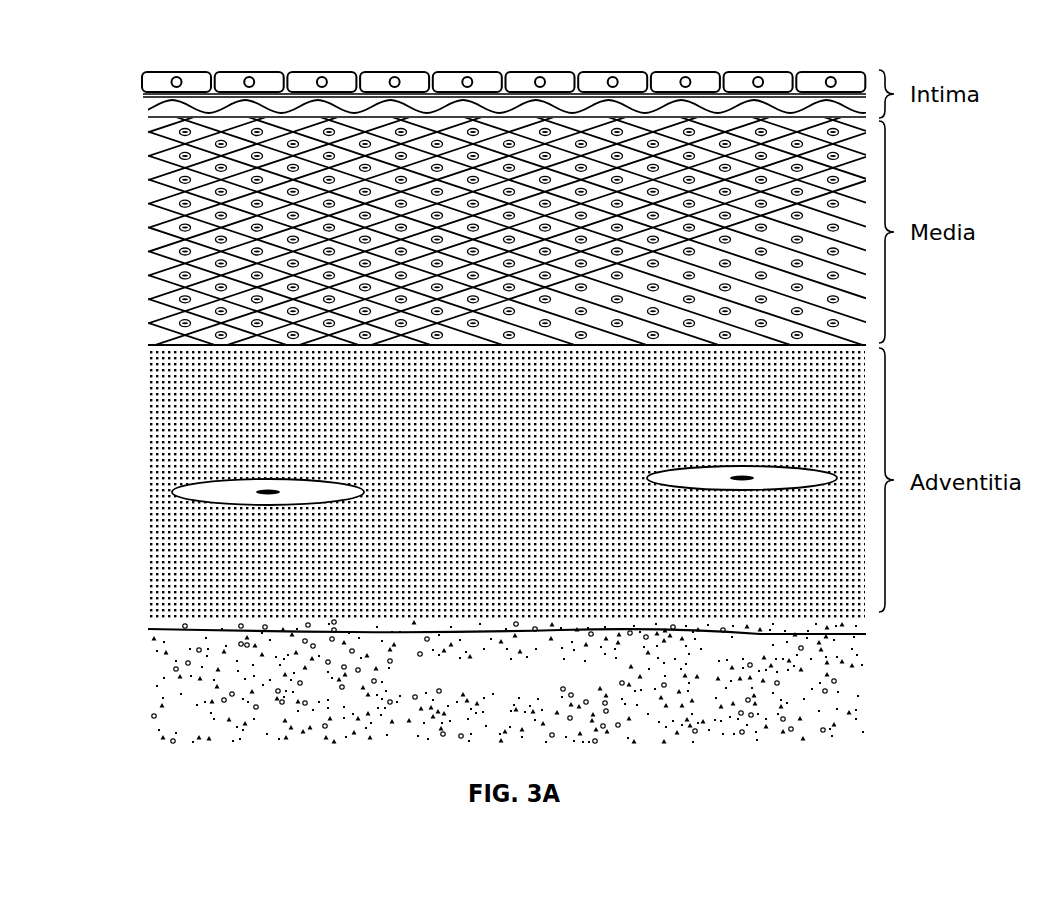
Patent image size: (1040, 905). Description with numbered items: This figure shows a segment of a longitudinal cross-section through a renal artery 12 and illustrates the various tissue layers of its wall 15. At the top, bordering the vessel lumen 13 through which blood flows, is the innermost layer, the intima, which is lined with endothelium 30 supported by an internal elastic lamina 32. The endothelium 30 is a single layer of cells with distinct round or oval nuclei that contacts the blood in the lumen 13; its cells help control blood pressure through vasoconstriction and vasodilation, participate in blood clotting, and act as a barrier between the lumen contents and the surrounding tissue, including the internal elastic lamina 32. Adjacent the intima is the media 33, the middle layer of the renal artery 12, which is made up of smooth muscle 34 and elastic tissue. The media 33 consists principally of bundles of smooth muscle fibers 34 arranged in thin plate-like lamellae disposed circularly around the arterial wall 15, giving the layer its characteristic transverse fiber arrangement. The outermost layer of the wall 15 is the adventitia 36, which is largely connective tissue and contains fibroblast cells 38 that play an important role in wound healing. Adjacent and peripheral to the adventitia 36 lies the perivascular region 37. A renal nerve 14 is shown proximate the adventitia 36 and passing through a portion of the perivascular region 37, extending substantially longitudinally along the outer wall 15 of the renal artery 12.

The renal artery 12 is at (160, 38).
The vessel lumen 13 is at (556, 60).
The renal nerve 14 is at (152, 630).
The wall 15 is at (97, 416).
The endothelium 30 is at (313, 71).
The internal elastic lamina 32 is at (137, 90).
The media 33 is at (136, 201).
The smooth muscle 34 is at (160, 177).
The adventitia 36 is at (150, 382).
The perivascular region 37 is at (165, 706).
The fibroblast cells 38 is at (176, 488).